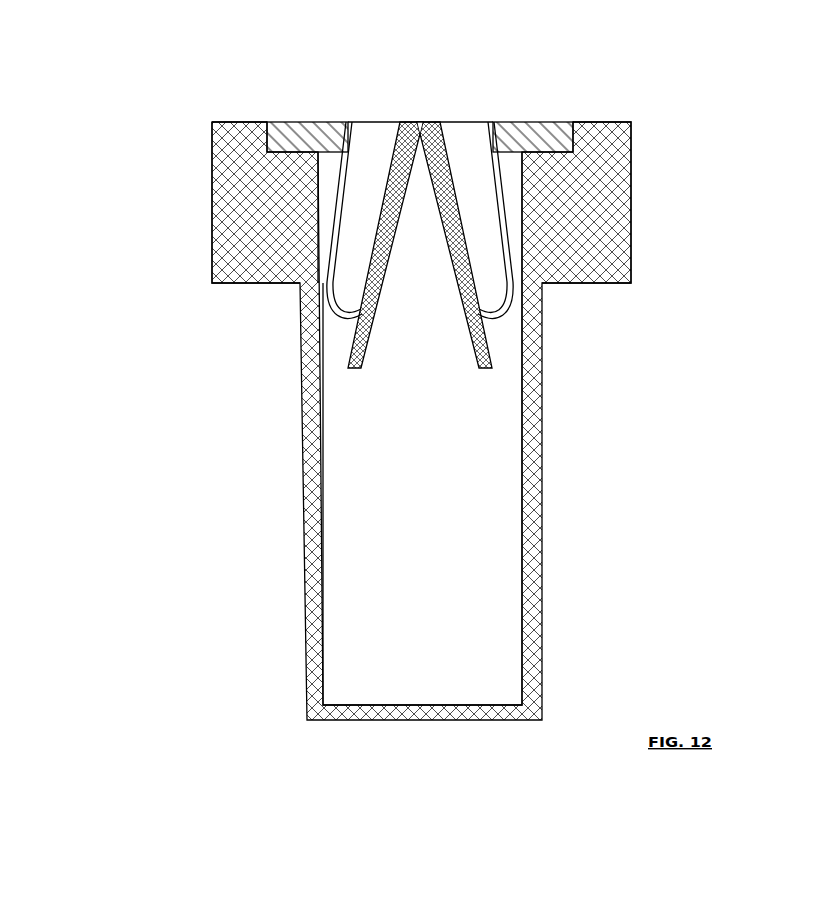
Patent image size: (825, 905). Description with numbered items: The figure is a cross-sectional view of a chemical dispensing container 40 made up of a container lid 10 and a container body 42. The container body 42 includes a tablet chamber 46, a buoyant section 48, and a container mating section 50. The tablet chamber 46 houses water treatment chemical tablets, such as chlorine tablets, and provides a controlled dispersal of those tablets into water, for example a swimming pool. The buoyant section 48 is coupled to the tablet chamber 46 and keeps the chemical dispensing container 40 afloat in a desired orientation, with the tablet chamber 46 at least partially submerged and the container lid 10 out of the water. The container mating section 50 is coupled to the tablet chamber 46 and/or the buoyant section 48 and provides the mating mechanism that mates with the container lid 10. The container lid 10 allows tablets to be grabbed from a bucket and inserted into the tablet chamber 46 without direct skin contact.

The container lid 10 is at (427, 206).
The chemical dispensing container 40 is at (427, 425).
The container body 42 is at (409, 421).
The tablet chamber 46 is at (335, 494).
The buoyant section 48 is at (698, 199).
The container mating section 50 is at (670, 79).